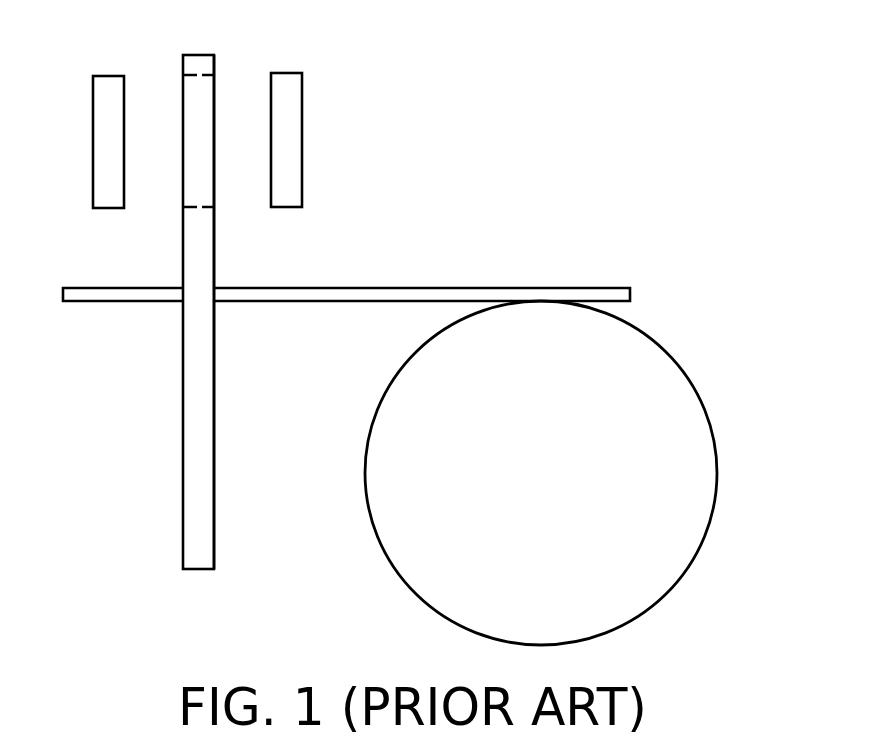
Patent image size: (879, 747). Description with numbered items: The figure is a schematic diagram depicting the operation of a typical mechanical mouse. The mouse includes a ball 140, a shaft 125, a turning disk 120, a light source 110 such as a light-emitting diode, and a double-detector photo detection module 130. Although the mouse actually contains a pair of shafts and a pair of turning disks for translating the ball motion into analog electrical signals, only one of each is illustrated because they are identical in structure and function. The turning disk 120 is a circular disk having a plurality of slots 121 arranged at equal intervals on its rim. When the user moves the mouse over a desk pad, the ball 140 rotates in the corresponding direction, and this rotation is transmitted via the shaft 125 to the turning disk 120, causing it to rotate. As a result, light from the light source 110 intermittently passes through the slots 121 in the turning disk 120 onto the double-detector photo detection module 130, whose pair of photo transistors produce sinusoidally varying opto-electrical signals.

The light source 110 is at (112, 76).
The turning disk 120 is at (183, 495).
The slots 121 is at (213, 113).
The shaft 125 is at (533, 287).
The double-detector photo detection module 130 is at (288, 73).
The ball 140 is at (665, 595).